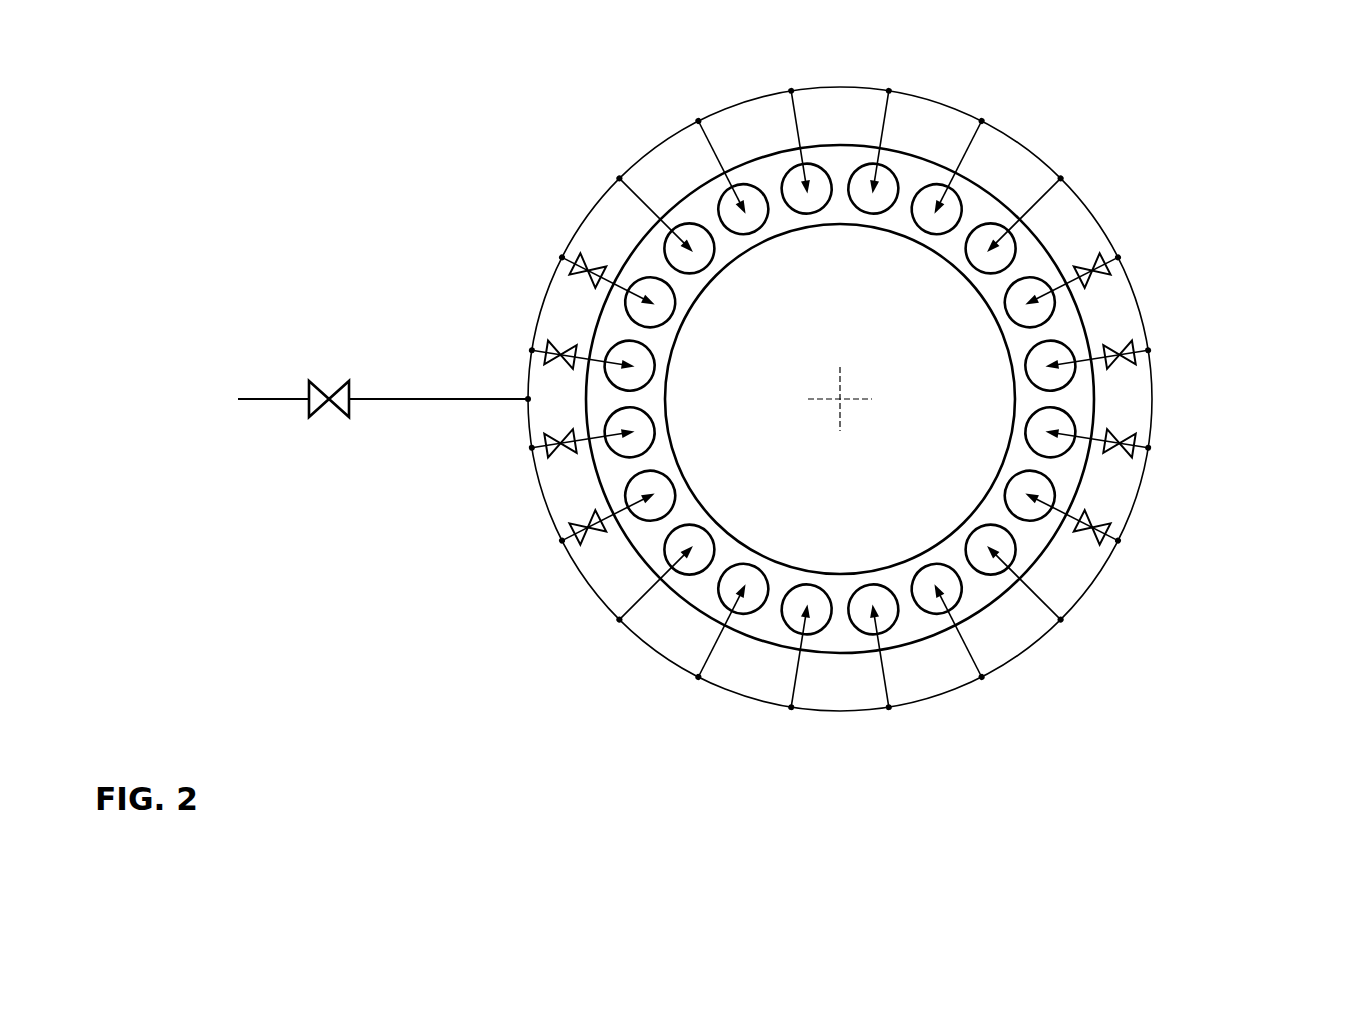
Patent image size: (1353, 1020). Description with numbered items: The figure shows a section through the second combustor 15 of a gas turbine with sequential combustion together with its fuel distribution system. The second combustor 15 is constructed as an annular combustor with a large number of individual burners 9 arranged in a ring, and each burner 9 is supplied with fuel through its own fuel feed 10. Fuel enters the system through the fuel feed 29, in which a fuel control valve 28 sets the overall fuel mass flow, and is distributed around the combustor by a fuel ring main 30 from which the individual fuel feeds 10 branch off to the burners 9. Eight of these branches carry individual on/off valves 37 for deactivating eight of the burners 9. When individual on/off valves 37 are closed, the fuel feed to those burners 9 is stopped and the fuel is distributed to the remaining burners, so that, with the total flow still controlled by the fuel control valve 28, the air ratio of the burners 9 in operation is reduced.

The fuel feed 10 is at (803, 376).
The burner of second combustor 9 is at (1022, 292).
The second combustor 15 is at (981, 591).
The fuel ring main 30 is at (650, 653).
The individual on/off valve 37 is at (837, 415).
The fuel feed 29 is at (364, 401).
The fuel control valve 28 is at (328, 407).